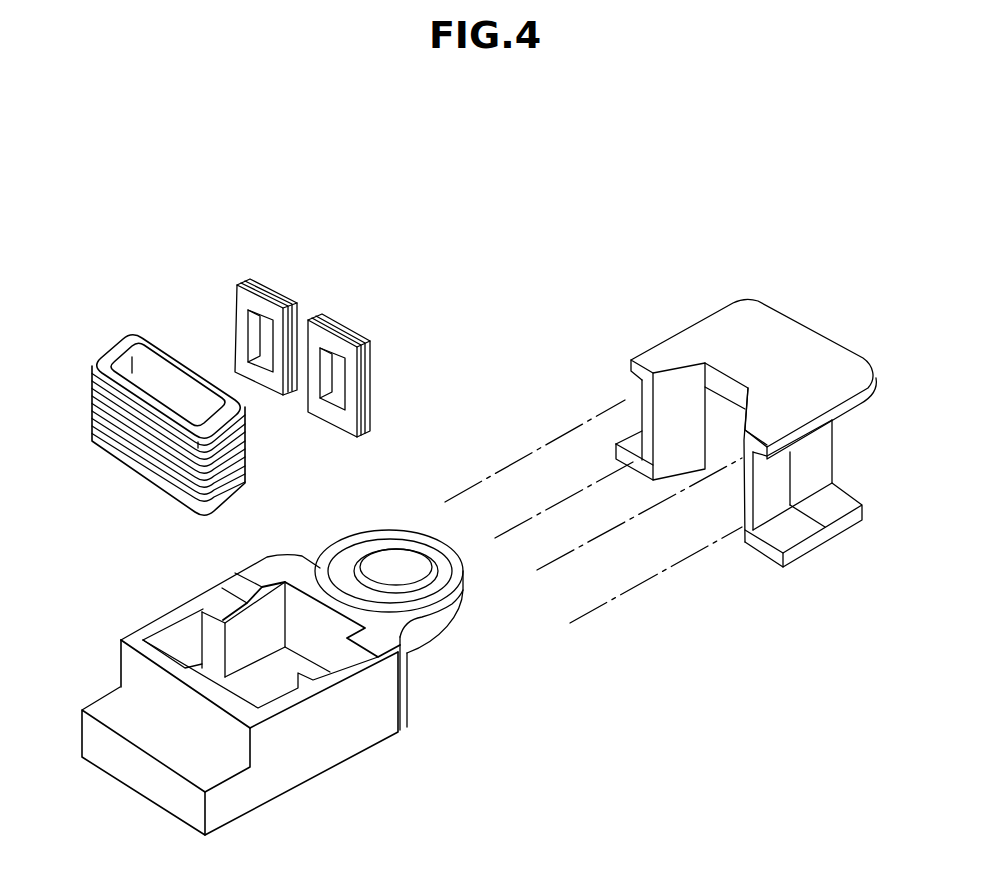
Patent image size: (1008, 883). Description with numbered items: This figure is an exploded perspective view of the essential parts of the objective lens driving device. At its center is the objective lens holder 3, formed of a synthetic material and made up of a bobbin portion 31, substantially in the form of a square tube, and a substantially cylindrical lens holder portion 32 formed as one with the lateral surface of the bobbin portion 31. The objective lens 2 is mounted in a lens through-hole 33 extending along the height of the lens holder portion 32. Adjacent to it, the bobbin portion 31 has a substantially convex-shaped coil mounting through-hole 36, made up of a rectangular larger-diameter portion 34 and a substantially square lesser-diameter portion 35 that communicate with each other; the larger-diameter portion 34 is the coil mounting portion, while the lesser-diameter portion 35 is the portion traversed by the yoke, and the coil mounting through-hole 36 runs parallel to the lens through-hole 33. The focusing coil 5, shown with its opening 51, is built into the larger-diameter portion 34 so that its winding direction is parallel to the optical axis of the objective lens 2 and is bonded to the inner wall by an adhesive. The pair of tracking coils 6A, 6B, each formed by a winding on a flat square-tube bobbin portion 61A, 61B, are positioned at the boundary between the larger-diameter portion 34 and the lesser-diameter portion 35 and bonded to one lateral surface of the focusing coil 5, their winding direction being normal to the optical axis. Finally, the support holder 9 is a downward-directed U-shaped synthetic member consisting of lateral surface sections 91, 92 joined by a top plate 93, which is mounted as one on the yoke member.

The objective lens 2 is at (399, 560).
The objective lens holder 3 is at (478, 707).
The bobbin portion 31 is at (367, 728).
The lens holder portion 32 is at (455, 610).
The lens through-hole 33 is at (438, 573).
The larger-diameter portion 34 is at (185, 655).
The lesser-diameter portion 35 is at (252, 648).
The coil mounting through-hole 36 is at (217, 525).
The focusing coil 5 is at (100, 341).
The coil opening 51 is at (146, 382).
The tracking coil 6A is at (382, 342).
The tracking coil 6B is at (247, 282).
The bobbin portion 61A is at (352, 381).
The bobbin portion 61B is at (245, 318).
The support holder 9 is at (727, 287).
The lateral surface section 91 is at (812, 475).
The lateral surface section 92 is at (630, 397).
The top plate 93 is at (772, 337).